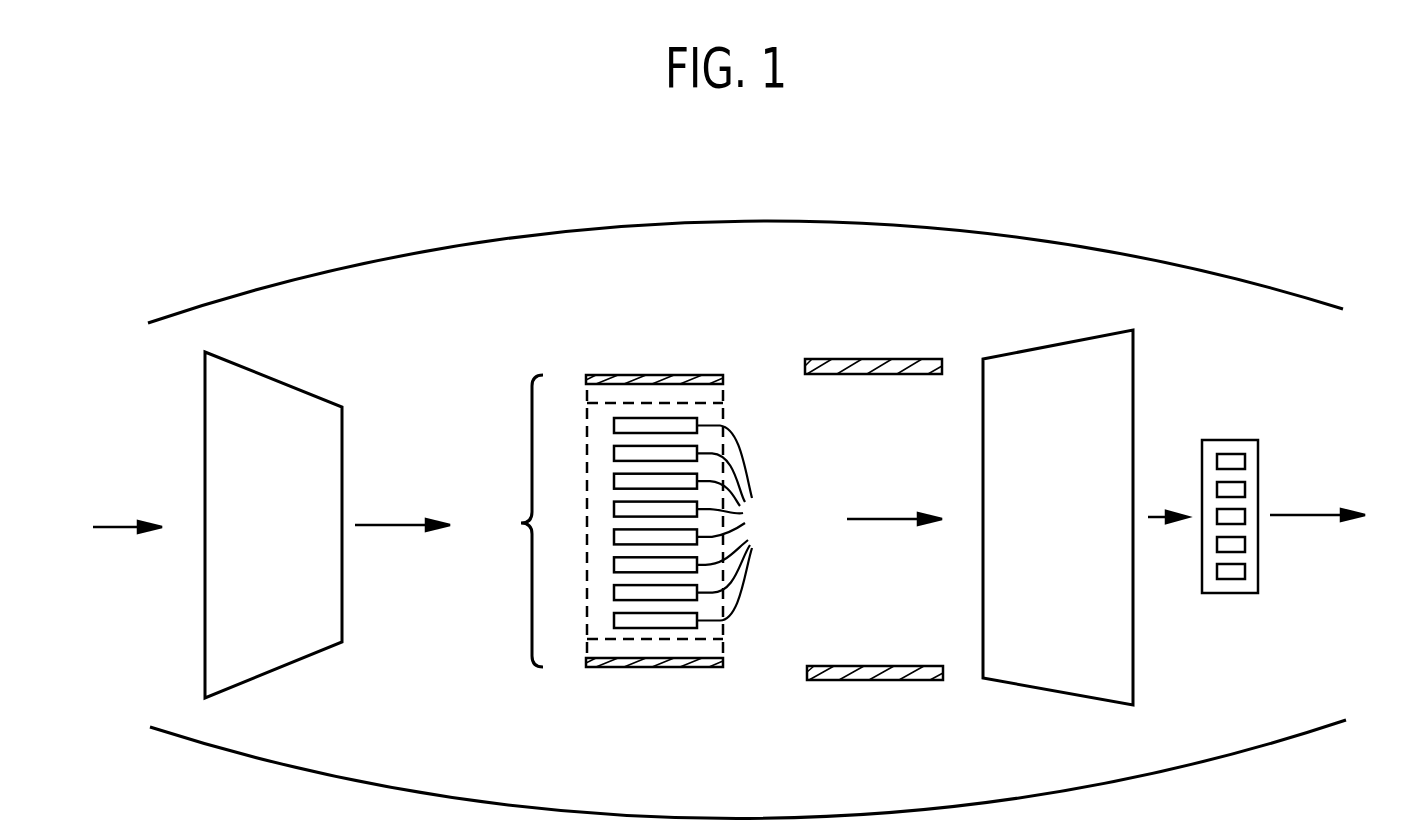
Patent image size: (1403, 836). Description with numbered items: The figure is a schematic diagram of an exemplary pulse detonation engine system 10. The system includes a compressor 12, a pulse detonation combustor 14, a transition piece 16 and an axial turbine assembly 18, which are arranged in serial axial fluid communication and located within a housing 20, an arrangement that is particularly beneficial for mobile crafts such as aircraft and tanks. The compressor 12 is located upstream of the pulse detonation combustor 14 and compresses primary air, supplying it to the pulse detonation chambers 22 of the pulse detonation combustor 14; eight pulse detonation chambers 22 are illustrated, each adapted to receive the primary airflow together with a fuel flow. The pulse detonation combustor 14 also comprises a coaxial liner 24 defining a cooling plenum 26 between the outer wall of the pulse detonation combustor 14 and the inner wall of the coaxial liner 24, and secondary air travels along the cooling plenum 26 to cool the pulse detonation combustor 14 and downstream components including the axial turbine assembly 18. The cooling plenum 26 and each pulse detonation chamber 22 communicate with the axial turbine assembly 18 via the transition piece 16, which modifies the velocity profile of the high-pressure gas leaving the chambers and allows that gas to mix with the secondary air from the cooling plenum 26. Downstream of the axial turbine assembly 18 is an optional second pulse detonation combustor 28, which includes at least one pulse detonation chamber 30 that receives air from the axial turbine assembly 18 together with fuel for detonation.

The pulse detonation engine system 10 is at (1033, 155).
The compressor 12 is at (278, 380).
The pulse detonation combustor 14 is at (631, 520).
The transition piece 16 is at (880, 359).
The axial turbine assembly 18 is at (1085, 337).
The housing 20 is at (699, 222).
The pulse detonation chamber 22 is at (695, 523).
The coaxial liner 24 is at (665, 375).
The cooling plenum 26 is at (712, 400).
The second pulse detonation combustor 28 is at (1253, 472).
The pulse detonation chamber 30 is at (1228, 440).